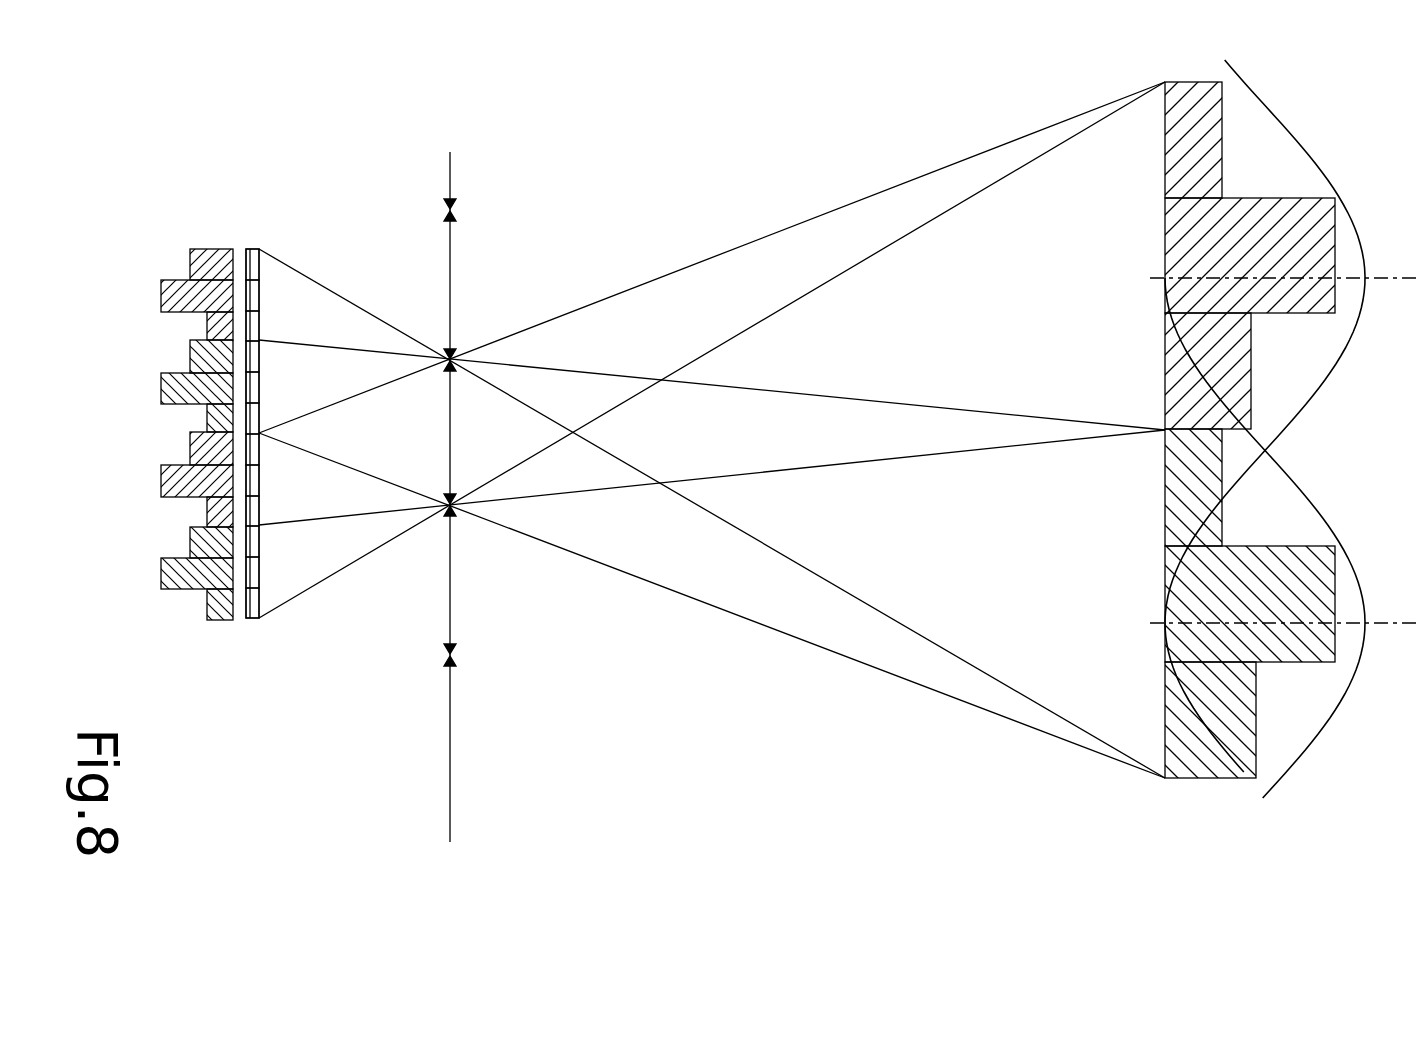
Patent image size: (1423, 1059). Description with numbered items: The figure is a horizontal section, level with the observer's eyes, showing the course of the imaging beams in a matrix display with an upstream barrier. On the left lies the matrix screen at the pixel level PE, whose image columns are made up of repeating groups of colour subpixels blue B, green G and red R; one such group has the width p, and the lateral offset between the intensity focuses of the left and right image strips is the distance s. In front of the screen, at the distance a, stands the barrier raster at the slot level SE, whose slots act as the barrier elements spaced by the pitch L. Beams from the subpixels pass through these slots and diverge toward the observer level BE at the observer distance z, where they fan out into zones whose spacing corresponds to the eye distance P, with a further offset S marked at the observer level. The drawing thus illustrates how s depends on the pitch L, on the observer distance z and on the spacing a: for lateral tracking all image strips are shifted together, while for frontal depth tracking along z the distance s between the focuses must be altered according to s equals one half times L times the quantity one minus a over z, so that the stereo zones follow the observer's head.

The pixel level PE is at (253, 568).
The slot level SE is at (449, 519).
The observer level BE is at (1166, 788).
The distance of the barrier elements (pitch) L is at (712, 430).
The blue B is at (265, 407).
The green G is at (266, 438).
The red R is at (265, 469).
The width of subpixel group p is at (190, 292).
The distance of intensity focuses s is at (184, 622).
The distance between matrix screen and barrier raster a is at (450, 810).
The observer distance to matrix screen z is at (1165, 808).
The viewing zone offset S is at (1388, 40).
The eye distance P is at (1388, 623).